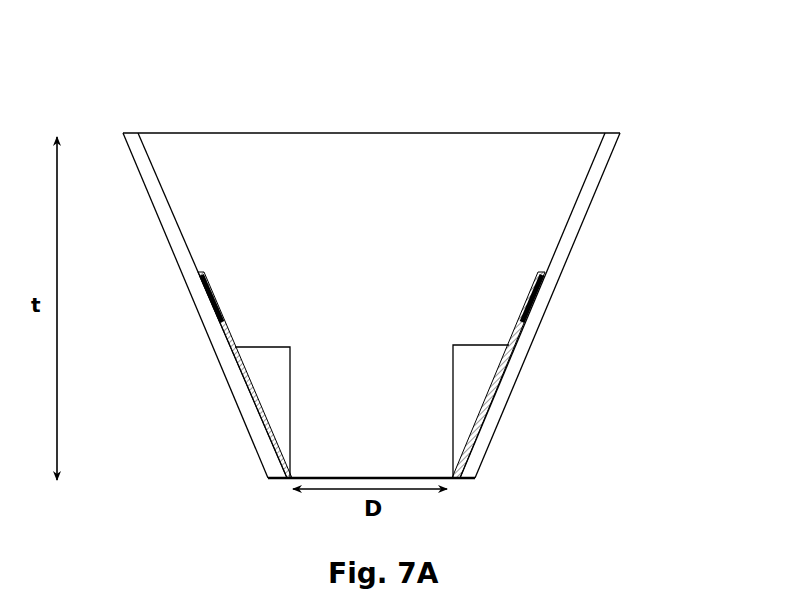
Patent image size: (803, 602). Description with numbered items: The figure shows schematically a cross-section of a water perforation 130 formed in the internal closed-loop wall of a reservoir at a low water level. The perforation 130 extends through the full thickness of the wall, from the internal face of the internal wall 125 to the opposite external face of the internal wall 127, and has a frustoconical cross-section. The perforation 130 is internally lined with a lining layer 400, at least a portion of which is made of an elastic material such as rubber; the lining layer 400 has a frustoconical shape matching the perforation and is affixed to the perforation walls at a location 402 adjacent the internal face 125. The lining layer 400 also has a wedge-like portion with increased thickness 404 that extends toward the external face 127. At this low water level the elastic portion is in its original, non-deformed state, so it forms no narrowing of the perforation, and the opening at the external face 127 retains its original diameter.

The internal face of the internal wall 125 is at (141, 128).
The perforation 130 is at (635, 111).
The external face of the internal wall 127 is at (486, 480).
The lining layer 400 is at (517, 334).
The location of affixation 402 is at (539, 278).
The portion with increased thickness 404 is at (478, 398).